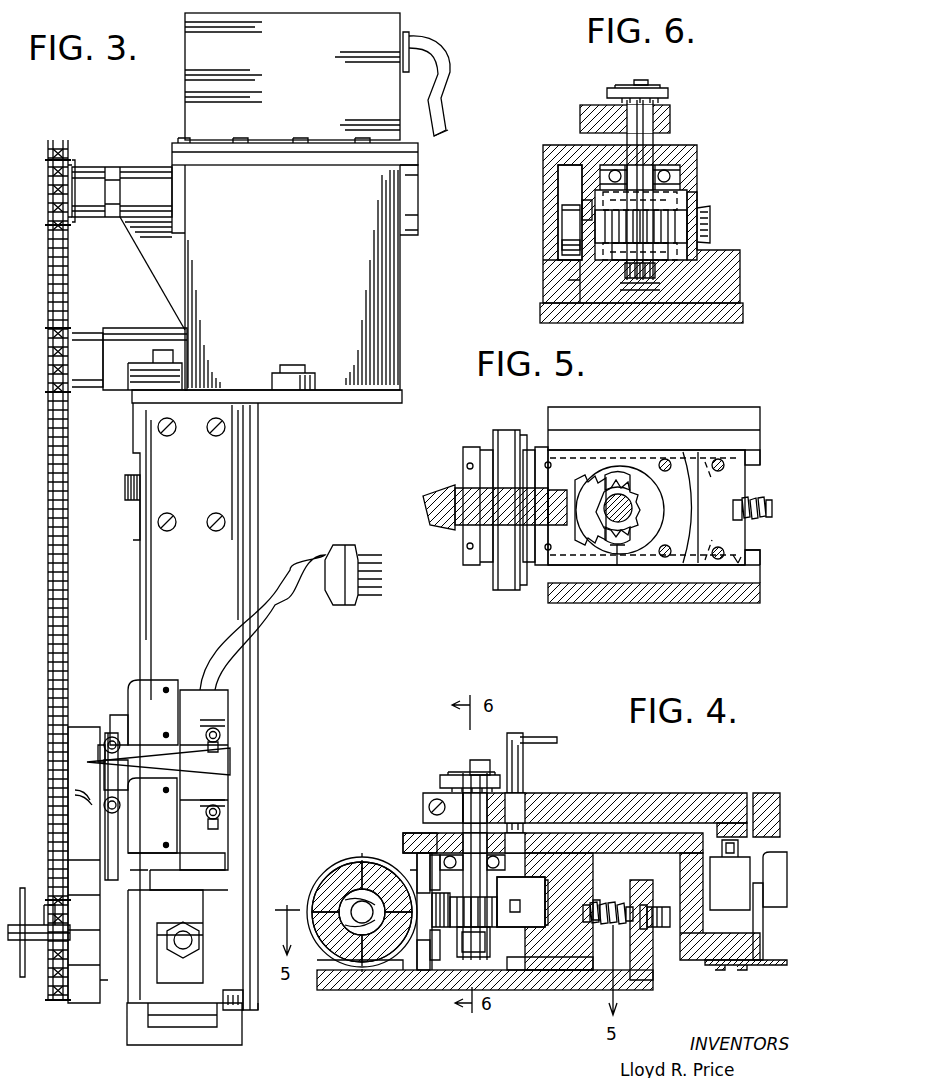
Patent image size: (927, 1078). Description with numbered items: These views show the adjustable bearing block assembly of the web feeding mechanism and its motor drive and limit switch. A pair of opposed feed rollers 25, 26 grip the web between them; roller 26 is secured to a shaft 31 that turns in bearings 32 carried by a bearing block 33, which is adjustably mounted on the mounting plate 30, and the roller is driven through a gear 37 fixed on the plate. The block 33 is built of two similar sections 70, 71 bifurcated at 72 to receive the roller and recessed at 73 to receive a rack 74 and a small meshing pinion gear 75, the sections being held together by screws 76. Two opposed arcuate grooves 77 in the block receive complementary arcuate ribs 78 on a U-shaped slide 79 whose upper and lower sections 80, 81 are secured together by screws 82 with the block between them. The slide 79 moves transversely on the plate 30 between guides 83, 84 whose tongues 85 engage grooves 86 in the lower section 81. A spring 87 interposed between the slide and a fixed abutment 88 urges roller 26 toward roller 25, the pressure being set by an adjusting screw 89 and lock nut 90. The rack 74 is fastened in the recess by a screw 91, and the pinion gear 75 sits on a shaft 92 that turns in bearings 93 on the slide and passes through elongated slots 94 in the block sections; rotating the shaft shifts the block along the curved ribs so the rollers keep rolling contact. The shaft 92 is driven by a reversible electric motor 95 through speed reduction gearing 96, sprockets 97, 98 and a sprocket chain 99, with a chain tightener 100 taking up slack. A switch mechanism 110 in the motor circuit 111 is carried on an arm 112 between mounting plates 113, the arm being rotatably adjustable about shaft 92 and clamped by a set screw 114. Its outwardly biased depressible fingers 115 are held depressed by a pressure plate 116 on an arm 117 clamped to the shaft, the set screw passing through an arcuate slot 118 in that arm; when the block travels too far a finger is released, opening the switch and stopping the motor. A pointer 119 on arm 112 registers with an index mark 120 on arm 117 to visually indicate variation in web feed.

In FIG. 5, the feed roller 25 is at (445, 492).
In FIG. 5, the feed roller 26 is at (470, 510).
In FIG. 4, the feed roller 26 is at (332, 865).
In FIG. 3, the mounting plate 30 is at (254, 540).
In FIG. 6, the mounting plate 30 is at (705, 323).
In FIG. 4, the mounting plate 30 is at (556, 990).
In FIG. 6, the shaft 31 is at (712, 228).
In FIG. 5, the shaft 31 is at (505, 590).
In FIG. 4, the shaft 31 is at (380, 902).
In FIG. 5, the bearings 32 is at (464, 460).
In FIG. 4, the bearings 32 is at (362, 860).
In FIG. 5, the bearing block 33 is at (628, 458).
In FIG. 4, the bearing block 33 is at (330, 950).
In FIG. 3, the gear 37 is at (125, 497).
In FIG. 6, the section of bearing block 70 is at (585, 205).
In FIG. 4, the section of bearing block 70 is at (537, 878).
In FIG. 6, the section of bearing block 71 is at (565, 255).
In FIG. 4, the section of bearing block 71 is at (530, 960).
In FIG. 5, the bifurcation 72 is at (558, 490).
In FIG. 6, the recess 73 is at (565, 208).
In FIG. 5, the recess 73 is at (655, 525).
In FIG. 4, the recess 73 is at (515, 905).
In FIG. 6, the rack 74 is at (687, 222).
In FIG. 5, the rack 74 is at (600, 470).
In FIG. 4, the rack 74 is at (468, 897).
In FIG. 6, the pinion gear 75 is at (678, 210).
In FIG. 5, the pinion gear 75 is at (642, 495).
In FIG. 4, the pinion gear 75 is at (473, 942).
In FIG. 5, the screws 76 is at (668, 460).
In FIG. 4, the arcuate grooves 77 is at (433, 878).
In FIG. 4, the arcuate ribs 78 is at (428, 835).
In FIG. 5, the slide 79 is at (742, 565).
In FIG. 4, the slide 79 is at (577, 862).
In FIG. 6, the upper section of slide 80 is at (699, 190).
In FIG. 4, the upper section of slide 80 is at (593, 897).
In FIG. 6, the lower section of slide 81 is at (648, 300).
In FIG. 4, the lower section of slide 81 is at (590, 975).
In FIG. 5, the screws 82 is at (722, 460).
In FIG. 6, the guide 83 is at (740, 290).
In FIG. 5, the guide 83 is at (760, 415).
In FIG. 3, the guide 84 is at (208, 1040).
In FIG. 6, the guide 84 is at (545, 280).
In FIG. 5, the guide 84 is at (590, 603).
In FIG. 3, the tongues 85 is at (243, 1008).
In FIG. 5, the tongues 85 is at (760, 462).
In FIG. 5, the grooves 86 is at (719, 511).
In FIG. 5, the spring 87 is at (768, 515).
In FIG. 4, the spring 87 is at (615, 902).
In FIG. 3, the fixed abutment 88 is at (232, 942).
In FIG. 4, the fixed abutment 88 is at (652, 975).
In FIG. 3, the adjusting screw 89 is at (192, 940).
In FIG. 4, the adjusting screw 89 is at (665, 925).
In FIG. 3, the lock nut 90 is at (195, 955).
In FIG. 4, the lock nut 90 is at (660, 907).
In FIG. 4, the screw 91 is at (374, 920).
In FIG. 6, the shaft 92 is at (640, 86).
In FIG. 5, the shaft 92 is at (642, 510).
In FIG. 4, the shaft 92 is at (466, 775).
In FIG. 6, the bearings 93 is at (672, 158).
In FIG. 4, the bearings 93 is at (452, 995).
In FIG. 6, the elongated slots 94 is at (645, 251).
In FIG. 5, the elongated slots 94 is at (616, 566).
In FIG. 3, the reversible electric motor 95 is at (195, 58).
In FIG. 3, the speed reduction gearing 96 is at (394, 310).
In FIG. 3, the sprocket 97 is at (48, 188).
In FIG. 3, the sprocket 98 is at (45, 908).
In FIG. 6, the sprocket 98 is at (660, 92).
In FIG. 4, the sprocket 98 is at (490, 772).
In FIG. 3, the sprocket chain 99 is at (48, 622).
In FIG. 3, the chain tightener 100 is at (130, 337).
In FIG. 3, the switch mechanism 110 is at (156, 694).
In FIG. 4, the switch mechanism 110 is at (753, 897).
In FIG. 3, the circuit 111 is at (448, 122).
In FIG. 3, the arm 112 is at (112, 853).
In FIG. 6, the arm 112 is at (700, 152).
In FIG. 4, the arm 112 is at (652, 850).
In FIG. 3, the mounting plates 113 is at (188, 690).
In FIG. 4, the mounting plates 113 is at (710, 915).
In FIG. 3, the set screw 114 is at (20, 935).
In FIG. 4, the set screw 114 is at (523, 735).
In FIG. 3, the depressible fingers 115 is at (121, 744).
In FIG. 4, the depressible fingers 115 is at (738, 858).
In FIG. 3, the pressure plate 116 is at (106, 740).
In FIG. 4, the pressure plate 116 is at (733, 823).
In FIG. 3, the arm 117 is at (68, 805).
In FIG. 6, the arm 117 is at (578, 118).
In FIG. 4, the arm 117 is at (700, 800).
In FIG. 4, the arcuate slot 118 is at (537, 795).
In FIG. 3, the pointer 119 is at (230, 760).
In FIG. 4, the pointer 119 is at (775, 972).
In FIG. 3, the index mark 120 is at (82, 752).